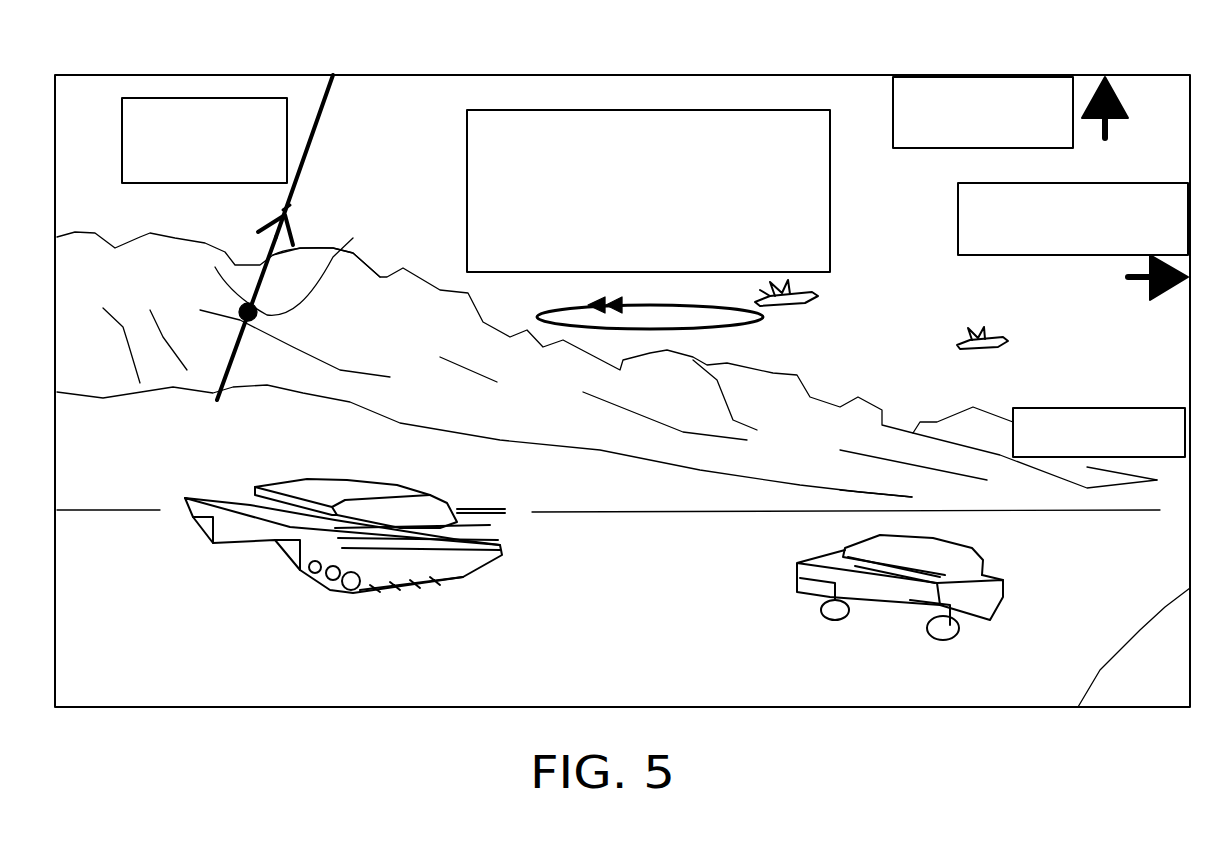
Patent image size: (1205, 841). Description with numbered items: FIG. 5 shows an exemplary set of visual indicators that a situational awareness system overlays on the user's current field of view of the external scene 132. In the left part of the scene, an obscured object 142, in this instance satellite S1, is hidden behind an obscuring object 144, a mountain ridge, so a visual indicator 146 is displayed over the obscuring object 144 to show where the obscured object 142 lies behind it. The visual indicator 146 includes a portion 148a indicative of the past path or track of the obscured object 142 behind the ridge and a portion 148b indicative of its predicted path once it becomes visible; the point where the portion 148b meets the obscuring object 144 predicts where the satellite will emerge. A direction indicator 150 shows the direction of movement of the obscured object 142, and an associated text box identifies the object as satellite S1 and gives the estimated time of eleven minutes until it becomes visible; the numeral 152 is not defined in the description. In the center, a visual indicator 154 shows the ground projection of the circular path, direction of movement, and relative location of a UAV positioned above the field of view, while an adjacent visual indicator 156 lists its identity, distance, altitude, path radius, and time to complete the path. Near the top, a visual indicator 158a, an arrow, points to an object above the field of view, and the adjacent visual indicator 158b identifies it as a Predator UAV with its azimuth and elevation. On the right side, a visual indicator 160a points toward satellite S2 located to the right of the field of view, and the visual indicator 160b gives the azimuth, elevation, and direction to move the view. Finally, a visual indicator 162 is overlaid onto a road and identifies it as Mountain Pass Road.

The external scene 132 is at (587, 75).
The obscured object 142 is at (307, 271).
The obscuring object 144 is at (310, 243).
The visual indicator 146 is at (262, 217).
The past path portion 148a is at (243, 382).
The predicted path portion 148b is at (323, 115).
The direction indicator 150 is at (296, 212).
The satellite S1 information box 152 is at (120, 140).
The visual indicator 154 is at (745, 328).
The visual indicator 156 is at (648, 110).
The visual indicator 158a is at (1110, 120).
The visual indicator 158b is at (913, 148).
The visual indicator 160a is at (1140, 285).
The visual indicator 160b is at (958, 230).
The visual indicator 162 is at (1085, 457).